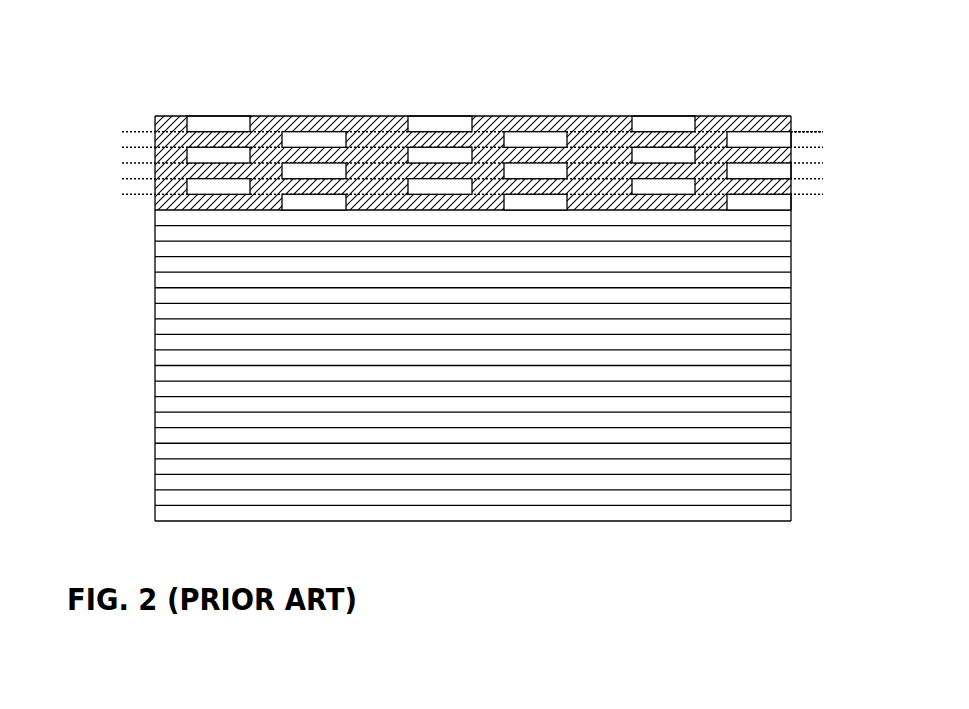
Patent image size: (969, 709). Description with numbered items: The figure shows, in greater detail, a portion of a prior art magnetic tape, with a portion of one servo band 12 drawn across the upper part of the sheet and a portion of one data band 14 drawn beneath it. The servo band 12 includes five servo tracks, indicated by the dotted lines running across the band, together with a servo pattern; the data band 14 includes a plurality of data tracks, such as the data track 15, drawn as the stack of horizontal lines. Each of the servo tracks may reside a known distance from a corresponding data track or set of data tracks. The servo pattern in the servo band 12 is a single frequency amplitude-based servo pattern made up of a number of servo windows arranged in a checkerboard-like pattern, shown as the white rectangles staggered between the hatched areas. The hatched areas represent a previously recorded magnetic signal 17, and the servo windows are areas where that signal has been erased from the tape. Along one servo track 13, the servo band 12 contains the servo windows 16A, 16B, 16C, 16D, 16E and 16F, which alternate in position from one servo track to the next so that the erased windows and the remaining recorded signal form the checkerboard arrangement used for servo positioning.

The servo band 12 is at (138, 116).
The servo track 13 is at (823, 132).
The data band 14 is at (138, 213).
The data track 15 is at (792, 249).
The servo window 16A is at (218, 115).
The servo window 16B is at (313, 128).
The servo window 16C is at (442, 115).
The servo window 16D is at (536, 128).
The servo window 16E is at (663, 115).
The servo window 16F is at (758, 128).
The previously recorded magnetic signal 17 is at (163, 116).